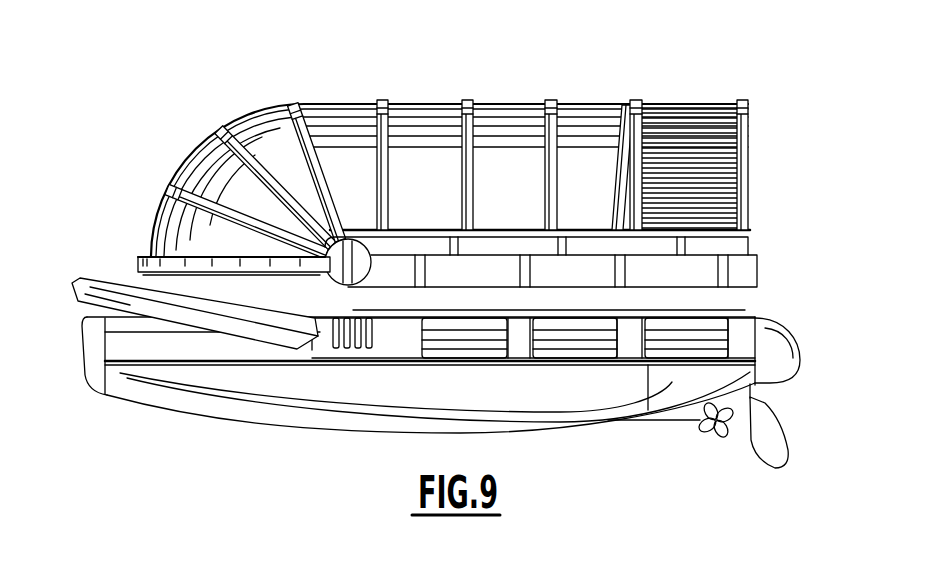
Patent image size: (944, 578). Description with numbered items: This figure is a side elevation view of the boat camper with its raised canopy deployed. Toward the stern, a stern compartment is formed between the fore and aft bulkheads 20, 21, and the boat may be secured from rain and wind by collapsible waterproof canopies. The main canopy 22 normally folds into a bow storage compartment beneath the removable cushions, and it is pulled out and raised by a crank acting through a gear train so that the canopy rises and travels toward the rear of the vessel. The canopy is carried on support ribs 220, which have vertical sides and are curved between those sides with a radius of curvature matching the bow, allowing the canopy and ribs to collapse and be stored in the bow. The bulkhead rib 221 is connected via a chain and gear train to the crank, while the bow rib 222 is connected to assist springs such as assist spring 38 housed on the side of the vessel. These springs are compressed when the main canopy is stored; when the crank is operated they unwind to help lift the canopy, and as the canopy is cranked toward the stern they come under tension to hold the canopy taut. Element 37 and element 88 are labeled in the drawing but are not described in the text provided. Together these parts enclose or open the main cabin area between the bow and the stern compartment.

The fore bulkhead 20 is at (636, 100).
The aft bulkhead 21 is at (745, 100).
The main canopy 22 is at (199, 149).
The boarding ramp 37 is at (98, 274).
The assist spring 38 is at (346, 264).
The louvered panel 88 is at (683, 105).
The support ribs 220 is at (167, 191).
The bulkhead rib 221 is at (626, 103).
The bow rib 222 is at (141, 257).